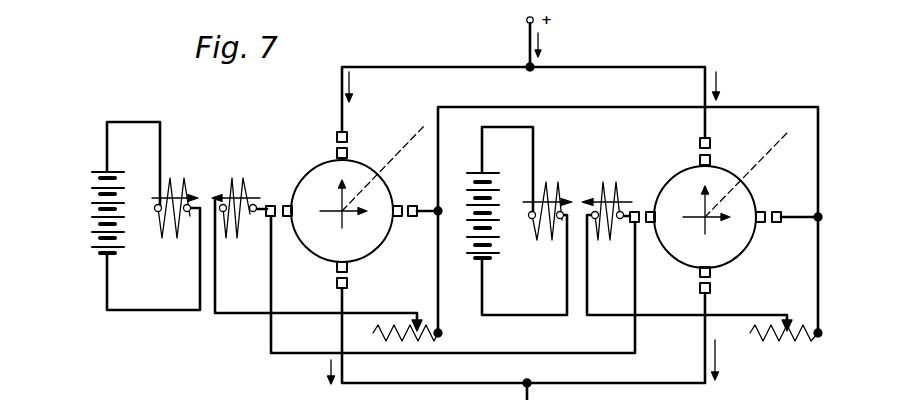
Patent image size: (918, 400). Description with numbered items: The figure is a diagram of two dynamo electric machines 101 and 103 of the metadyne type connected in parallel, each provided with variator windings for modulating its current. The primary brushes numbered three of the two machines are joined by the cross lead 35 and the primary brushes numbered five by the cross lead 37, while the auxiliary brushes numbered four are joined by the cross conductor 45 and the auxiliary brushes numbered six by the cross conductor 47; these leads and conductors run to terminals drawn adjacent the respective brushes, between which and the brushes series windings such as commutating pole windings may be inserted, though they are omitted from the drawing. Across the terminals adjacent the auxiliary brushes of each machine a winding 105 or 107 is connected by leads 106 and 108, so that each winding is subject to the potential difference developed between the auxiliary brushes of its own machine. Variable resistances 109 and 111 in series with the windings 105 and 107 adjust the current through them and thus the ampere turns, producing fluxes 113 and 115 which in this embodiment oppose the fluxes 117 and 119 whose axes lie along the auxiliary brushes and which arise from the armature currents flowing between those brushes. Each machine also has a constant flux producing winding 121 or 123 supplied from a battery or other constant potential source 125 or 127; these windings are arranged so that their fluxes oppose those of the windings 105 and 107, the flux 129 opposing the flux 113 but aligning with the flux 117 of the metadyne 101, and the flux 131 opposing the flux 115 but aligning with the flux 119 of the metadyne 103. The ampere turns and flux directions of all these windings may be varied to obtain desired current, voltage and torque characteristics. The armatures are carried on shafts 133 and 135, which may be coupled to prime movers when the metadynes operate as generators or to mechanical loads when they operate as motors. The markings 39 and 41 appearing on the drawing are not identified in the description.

The cross lead 35 is at (434, 67).
The cross lead 37 is at (468, 383).
The current direction arrow (first motor) 39 is at (355, 80).
The current direction arrow (second motor) 41 is at (720, 72).
The cross conductor 45 is at (628, 92).
The cross conductor 47 is at (510, 353).
The dynamo electric machine 101 is at (354, 203).
The dynamo electric machine 103 is at (726, 213).
The winding 105 is at (234, 178).
The lead 106 is at (229, 308).
The winding 107 is at (600, 184).
The lead 108 is at (606, 313).
The variable resistance 109 is at (430, 325).
The variable resistance 111 is at (802, 322).
The flux 113 is at (251, 197).
The flux 115 is at (618, 200).
The flux 117 is at (323, 213).
The flux 119 is at (686, 219).
The winding 121 is at (174, 168).
The winding 123 is at (544, 182).
The battery 125 is at (92, 200).
The battery 127 is at (497, 236).
The flux 129 is at (196, 194).
The flux 131 is at (568, 198).
The shaft 133 is at (395, 152).
The shaft 135 is at (762, 156).